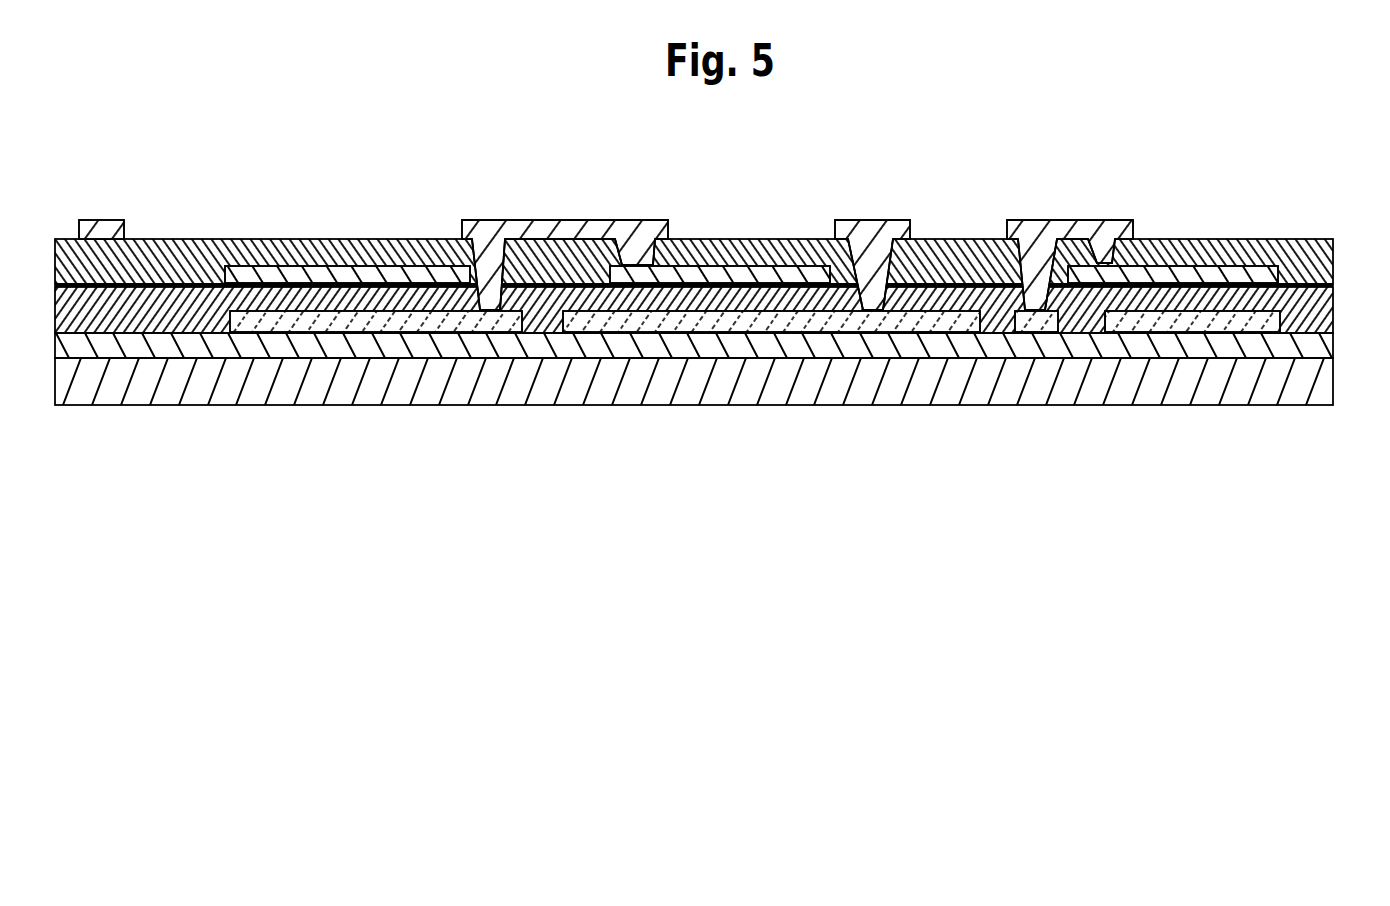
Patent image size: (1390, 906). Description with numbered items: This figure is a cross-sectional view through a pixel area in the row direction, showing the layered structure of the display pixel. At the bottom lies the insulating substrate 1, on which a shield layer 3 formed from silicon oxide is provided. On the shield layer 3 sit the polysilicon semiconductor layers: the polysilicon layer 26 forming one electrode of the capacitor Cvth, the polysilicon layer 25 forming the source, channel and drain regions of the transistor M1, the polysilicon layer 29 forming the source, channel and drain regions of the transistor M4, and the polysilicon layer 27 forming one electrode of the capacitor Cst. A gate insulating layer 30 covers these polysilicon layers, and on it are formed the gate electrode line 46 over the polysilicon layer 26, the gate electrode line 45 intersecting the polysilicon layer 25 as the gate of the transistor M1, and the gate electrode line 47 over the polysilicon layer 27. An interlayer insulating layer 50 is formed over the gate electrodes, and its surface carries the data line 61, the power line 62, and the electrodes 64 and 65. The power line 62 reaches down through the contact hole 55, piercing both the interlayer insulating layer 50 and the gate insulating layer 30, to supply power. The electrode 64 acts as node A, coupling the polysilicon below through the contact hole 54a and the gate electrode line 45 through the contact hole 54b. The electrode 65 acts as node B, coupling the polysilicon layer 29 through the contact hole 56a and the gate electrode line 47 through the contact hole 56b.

The insulating substrate 1 is at (1333, 382).
The shield layer 3 is at (1333, 347).
The gate insulating layer 30 is at (1333, 305).
The interlayer insulating layer 50 is at (1333, 260).
The polysilicon layer 26 is at (283, 327).
The polysilicon layer 25 is at (757, 330).
The polysilicon layer 29 is at (1022, 330).
The polysilicon layer 27 is at (1253, 328).
The gate electrode line 46 is at (331, 270).
The gate electrode line 45 is at (763, 258).
The gate electrode line 47 is at (1195, 270).
The data line 61 is at (99, 232).
The power line 62 is at (875, 224).
The electrode 64 is at (488, 230).
The electrode 65 is at (1070, 226).
The contact hole 54a is at (485, 308).
The contact hole 54b is at (636, 268).
The contact hole 55 is at (871, 310).
The contact hole 56a is at (1038, 310).
The contact hole 56b is at (1103, 265).